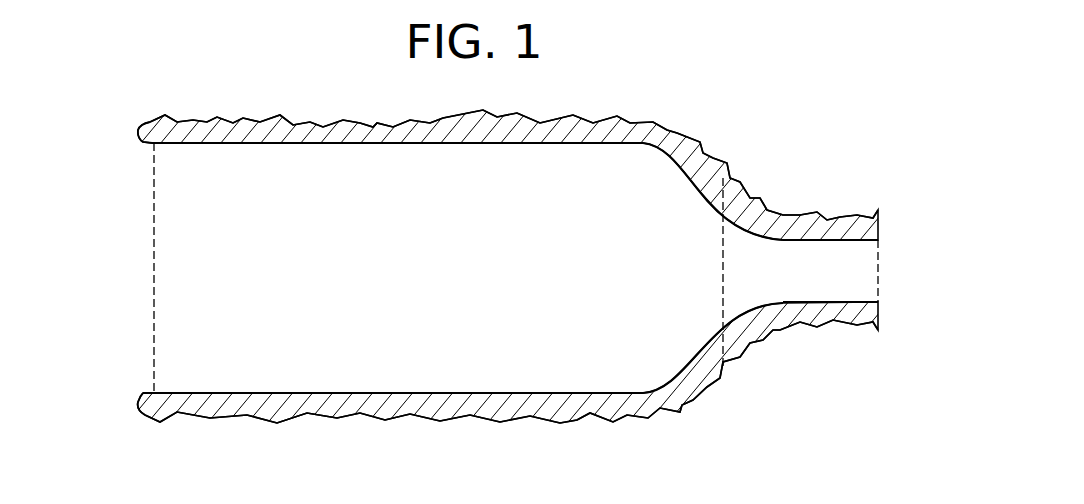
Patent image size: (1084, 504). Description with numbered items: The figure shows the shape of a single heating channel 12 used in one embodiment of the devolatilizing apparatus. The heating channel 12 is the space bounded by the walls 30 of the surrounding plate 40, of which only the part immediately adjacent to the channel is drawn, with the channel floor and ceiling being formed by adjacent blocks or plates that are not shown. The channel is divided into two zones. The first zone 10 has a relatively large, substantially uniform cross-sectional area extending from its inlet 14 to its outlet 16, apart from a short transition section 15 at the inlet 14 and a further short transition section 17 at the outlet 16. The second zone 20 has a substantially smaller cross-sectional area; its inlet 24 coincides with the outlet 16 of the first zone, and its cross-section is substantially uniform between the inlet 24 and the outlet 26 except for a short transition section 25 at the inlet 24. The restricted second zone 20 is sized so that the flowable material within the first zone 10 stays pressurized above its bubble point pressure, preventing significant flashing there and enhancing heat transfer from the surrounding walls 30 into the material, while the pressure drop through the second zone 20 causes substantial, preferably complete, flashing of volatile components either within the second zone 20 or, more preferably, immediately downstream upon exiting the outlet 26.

The first zone 10 is at (396, 259).
The heating channel 12 is at (642, 168).
The inlet 14 is at (150, 266).
The transition section 15 is at (142, 142).
The outlet 16 is at (720, 254).
The transition section 17 is at (695, 184).
The second zone 20 is at (834, 282).
The inlet 24 is at (727, 293).
The transition section 25 is at (752, 230).
The outlet 26 is at (889, 255).
The walls 30 is at (204, 147).
The plate 40 is at (420, 107).